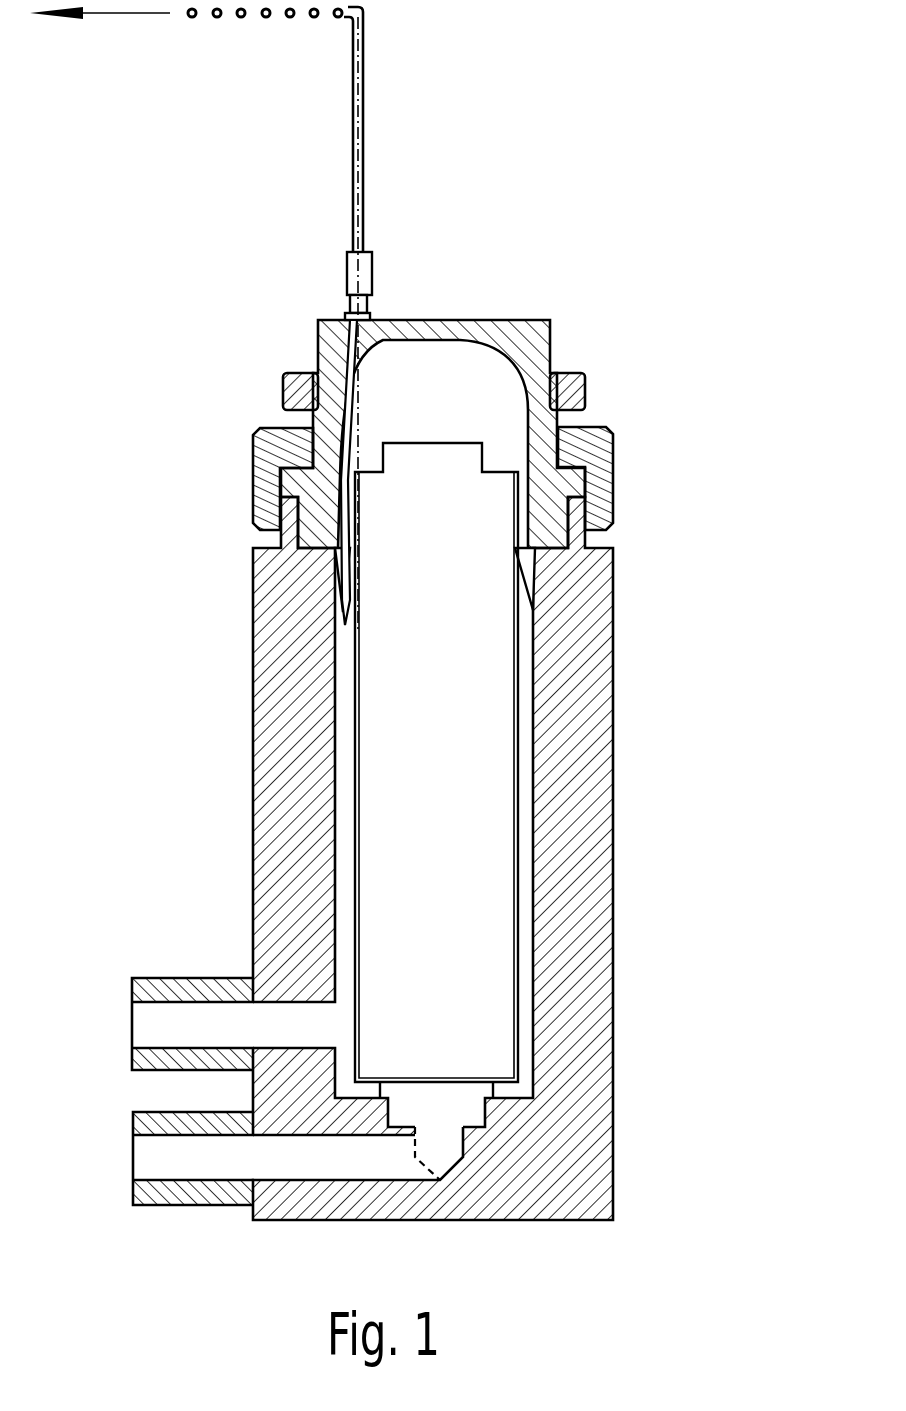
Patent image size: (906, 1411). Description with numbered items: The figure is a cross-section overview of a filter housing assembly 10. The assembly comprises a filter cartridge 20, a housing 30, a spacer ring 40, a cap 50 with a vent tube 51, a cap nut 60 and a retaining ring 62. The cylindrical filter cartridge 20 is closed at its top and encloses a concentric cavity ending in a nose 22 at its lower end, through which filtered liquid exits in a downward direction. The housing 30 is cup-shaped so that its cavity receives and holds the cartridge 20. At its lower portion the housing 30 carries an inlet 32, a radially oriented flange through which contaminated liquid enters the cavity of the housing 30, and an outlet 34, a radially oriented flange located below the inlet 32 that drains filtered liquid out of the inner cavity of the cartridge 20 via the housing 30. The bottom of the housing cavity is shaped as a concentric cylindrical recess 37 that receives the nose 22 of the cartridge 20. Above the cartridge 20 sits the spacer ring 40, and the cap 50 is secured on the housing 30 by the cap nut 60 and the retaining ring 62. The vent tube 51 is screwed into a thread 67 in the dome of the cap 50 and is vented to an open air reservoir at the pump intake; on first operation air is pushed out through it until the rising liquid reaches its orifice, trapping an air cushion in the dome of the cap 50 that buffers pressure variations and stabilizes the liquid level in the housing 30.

The housing assembly 10 is at (637, 308).
The filter cartridge 20 is at (463, 621).
The nose 22 is at (475, 1115).
The housing 30 is at (598, 636).
The inlet 32 is at (160, 990).
The outlet 34 is at (157, 1197).
The cylindrical recess 37 is at (404, 1110).
The spacer ring 40 is at (336, 557).
The cap 50 is at (318, 330).
The vent tube 51 is at (363, 194).
The cap nut 60 is at (258, 505).
The retaining ring 62 is at (284, 378).
The thread 67 is at (370, 318).